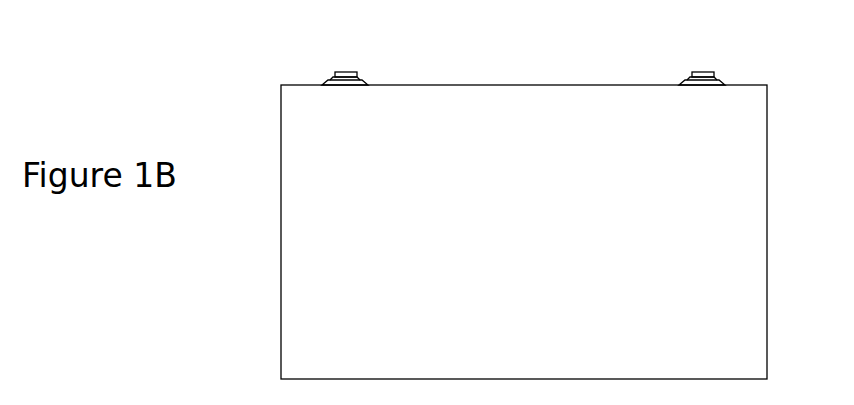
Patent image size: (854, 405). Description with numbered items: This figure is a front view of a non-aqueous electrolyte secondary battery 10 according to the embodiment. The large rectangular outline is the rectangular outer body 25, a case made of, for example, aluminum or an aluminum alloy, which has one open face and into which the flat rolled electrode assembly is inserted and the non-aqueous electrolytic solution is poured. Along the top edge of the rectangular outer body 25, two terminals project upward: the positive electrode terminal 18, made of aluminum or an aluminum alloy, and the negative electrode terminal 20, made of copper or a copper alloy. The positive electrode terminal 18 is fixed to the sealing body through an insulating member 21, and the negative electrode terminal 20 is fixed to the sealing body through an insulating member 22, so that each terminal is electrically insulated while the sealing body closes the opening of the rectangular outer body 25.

The non-aqueous electrolyte secondary battery 10 is at (226, 90).
The positive electrode terminal 18 is at (700, 72).
The negative electrode terminal 20 is at (341, 72).
The insulating member 21 is at (719, 77).
The insulating member 22 is at (362, 77).
The rectangular outer body 25 is at (318, 199).